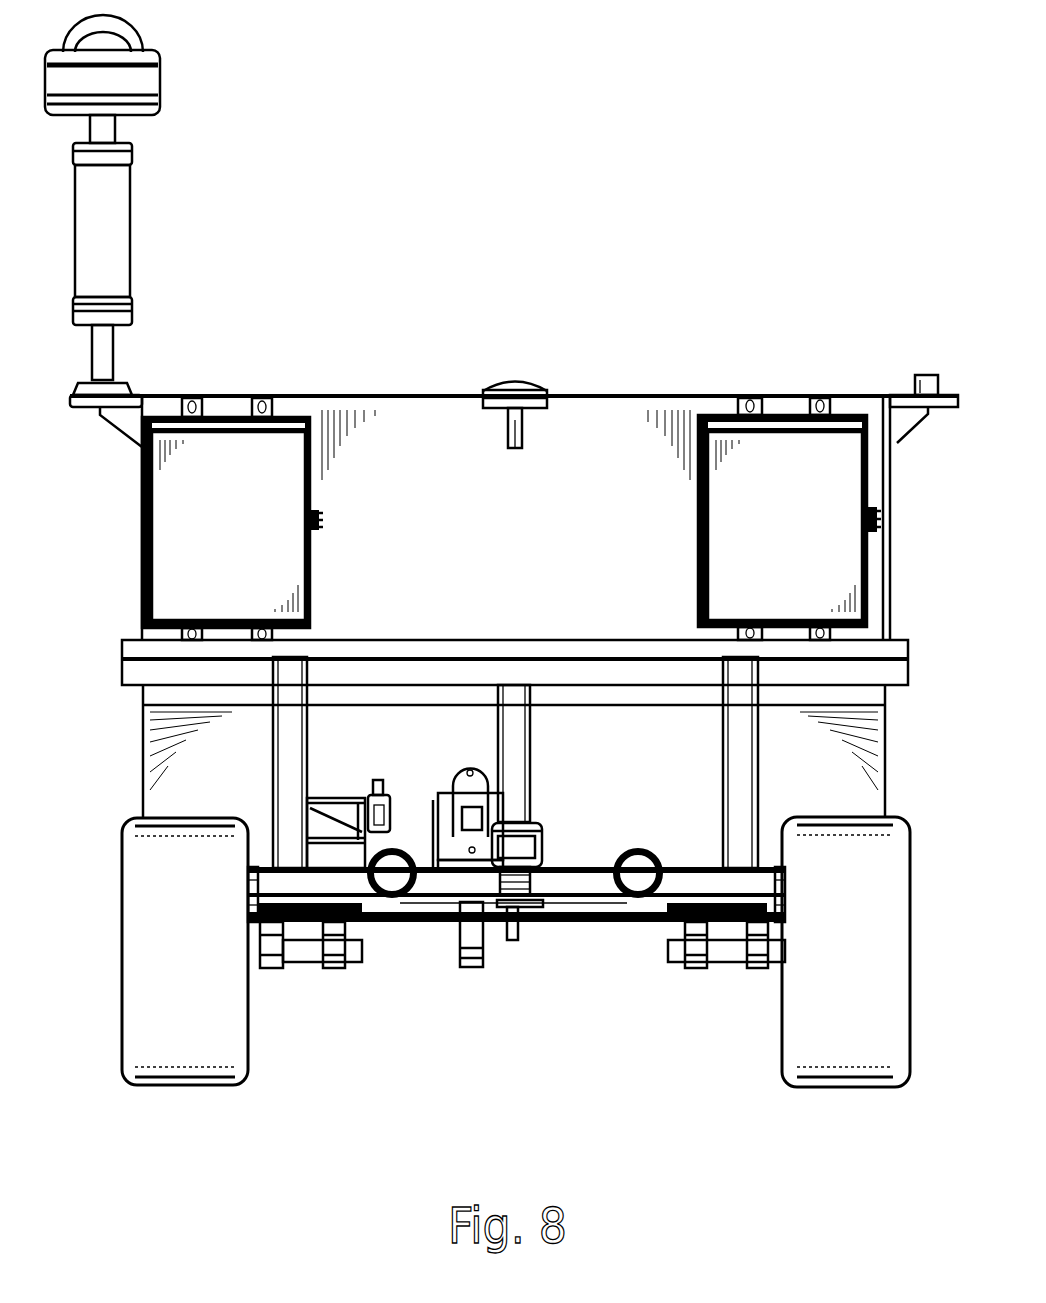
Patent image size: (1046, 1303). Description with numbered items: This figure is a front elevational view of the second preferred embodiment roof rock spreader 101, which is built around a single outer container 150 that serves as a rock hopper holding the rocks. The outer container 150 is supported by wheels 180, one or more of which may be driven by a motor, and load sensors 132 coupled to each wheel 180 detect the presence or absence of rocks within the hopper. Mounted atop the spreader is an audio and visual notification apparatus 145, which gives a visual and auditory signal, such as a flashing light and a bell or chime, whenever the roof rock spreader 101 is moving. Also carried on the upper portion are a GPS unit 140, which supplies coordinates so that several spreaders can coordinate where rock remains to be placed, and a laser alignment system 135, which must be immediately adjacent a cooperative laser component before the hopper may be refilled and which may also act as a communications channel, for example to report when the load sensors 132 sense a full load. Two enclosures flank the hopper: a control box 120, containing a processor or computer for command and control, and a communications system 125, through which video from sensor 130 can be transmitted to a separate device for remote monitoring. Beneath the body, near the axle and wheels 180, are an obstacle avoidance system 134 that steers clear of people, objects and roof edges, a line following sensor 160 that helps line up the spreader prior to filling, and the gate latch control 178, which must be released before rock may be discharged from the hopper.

The roof rock spreader 101 is at (515, 443).
The audio and visual notification apparatus 145 is at (182, 205).
The outer container 150 is at (514, 390).
The GPS unit 140 is at (546, 388).
The laser alignment system 135 is at (885, 369).
The control box 120 is at (190, 519).
The communications system 125 is at (789, 519).
The obstacle avoidance system 134 is at (565, 850).
The sensor 130 is at (516, 950).
The load sensors 132 is at (519, 960).
The line following sensor 160 is at (557, 930).
The gate latch control 178 is at (517, 946).
The wheels 180 is at (516, 964).